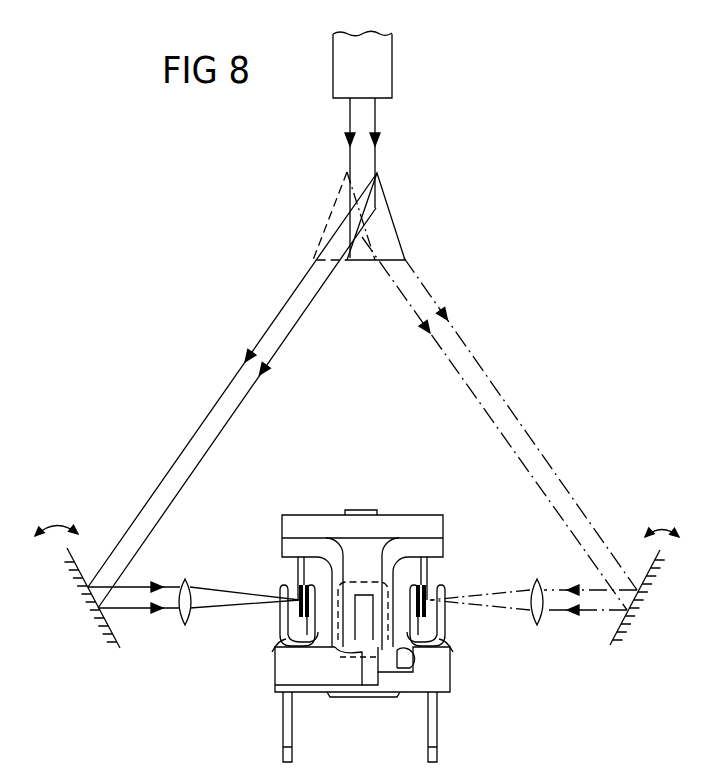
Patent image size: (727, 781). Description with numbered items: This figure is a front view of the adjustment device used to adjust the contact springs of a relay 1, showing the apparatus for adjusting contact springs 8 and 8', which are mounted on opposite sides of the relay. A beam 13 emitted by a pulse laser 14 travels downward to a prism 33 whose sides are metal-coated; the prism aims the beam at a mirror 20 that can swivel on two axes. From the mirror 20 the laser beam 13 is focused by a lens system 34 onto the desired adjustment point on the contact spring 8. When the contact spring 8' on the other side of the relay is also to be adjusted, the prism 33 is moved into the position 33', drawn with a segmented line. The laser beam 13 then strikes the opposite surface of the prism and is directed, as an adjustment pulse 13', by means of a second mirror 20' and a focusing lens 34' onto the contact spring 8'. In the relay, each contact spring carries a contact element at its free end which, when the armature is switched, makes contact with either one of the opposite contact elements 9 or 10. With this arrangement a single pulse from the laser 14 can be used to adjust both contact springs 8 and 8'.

The relay 1 is at (328, 673).
The contact spring 8 is at (277, 582).
The contact spring 8' is at (442, 574).
The opposite contact element 9 is at (275, 638).
The opposite contact element 10 is at (280, 623).
The laser beam 13 is at (249, 355).
The adjustment pulse 13' is at (499, 426).
The pulse laser 14 is at (382, 69).
The mirror 20 is at (77, 586).
The mirror 20' is at (644, 580).
The prism 33 is at (397, 216).
The prism position 33' is at (335, 211).
The lens system 34 is at (199, 578).
The focusing lens 34' is at (540, 579).